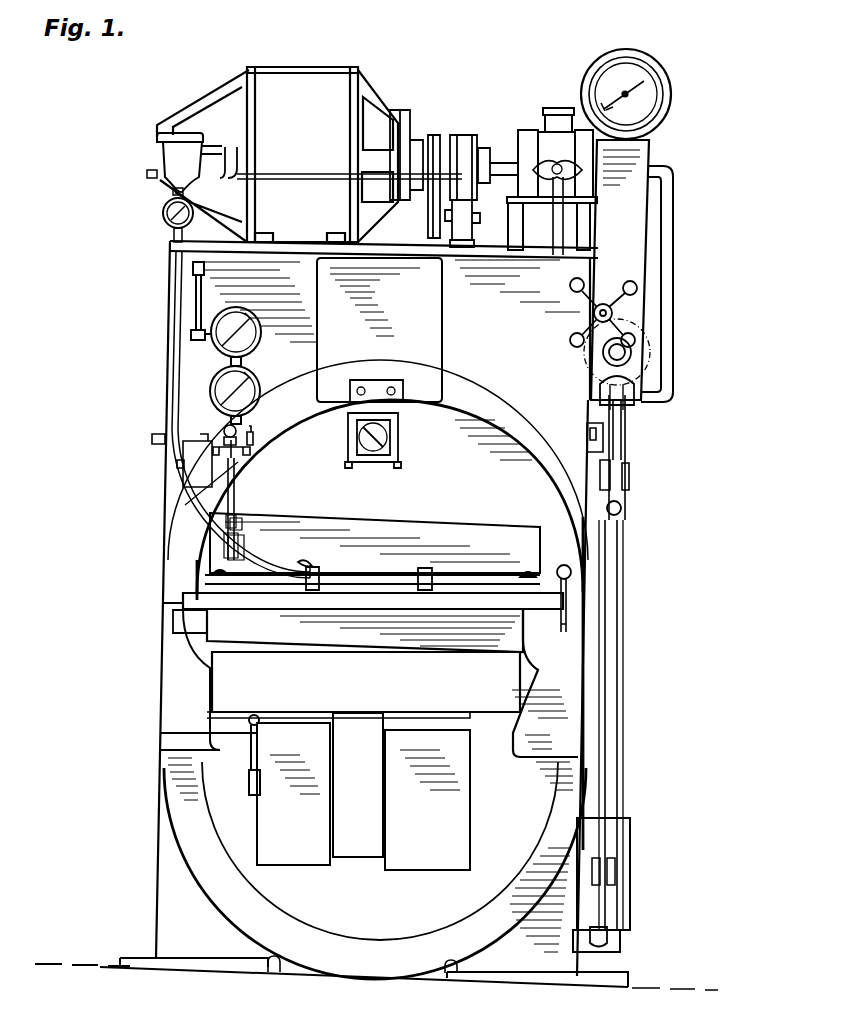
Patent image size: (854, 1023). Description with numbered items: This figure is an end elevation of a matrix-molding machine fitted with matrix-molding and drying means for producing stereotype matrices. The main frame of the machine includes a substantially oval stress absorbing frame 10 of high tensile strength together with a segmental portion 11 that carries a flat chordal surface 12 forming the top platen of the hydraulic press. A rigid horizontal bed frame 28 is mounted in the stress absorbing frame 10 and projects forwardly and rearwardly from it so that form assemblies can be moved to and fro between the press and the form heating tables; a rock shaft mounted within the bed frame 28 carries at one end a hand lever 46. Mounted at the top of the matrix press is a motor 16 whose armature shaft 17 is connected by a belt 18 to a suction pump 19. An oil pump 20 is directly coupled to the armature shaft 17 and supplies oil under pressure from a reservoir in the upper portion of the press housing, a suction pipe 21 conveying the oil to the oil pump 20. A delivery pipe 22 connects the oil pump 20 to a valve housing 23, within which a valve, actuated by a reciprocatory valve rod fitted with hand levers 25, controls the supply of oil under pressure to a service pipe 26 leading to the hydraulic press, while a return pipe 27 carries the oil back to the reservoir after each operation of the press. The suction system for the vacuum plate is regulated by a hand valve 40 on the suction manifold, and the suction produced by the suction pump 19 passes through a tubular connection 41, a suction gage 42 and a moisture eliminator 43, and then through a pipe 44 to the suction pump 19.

The stress absorbing frame 10 is at (513, 428).
The segmental portion 11 is at (379, 457).
The flat chordal surface 12 is at (508, 522).
The motor 16 is at (277, 154).
The armature shaft 17 is at (497, 162).
The belt 18 is at (427, 190).
The suction pump 19 is at (470, 222).
The oil pump 20 is at (545, 126).
The suction pipe 21 is at (555, 223).
The delivery pipe 22 is at (668, 247).
The valve housing 23 is at (638, 410).
The hand levers 25 is at (614, 443).
The service pipe 26 is at (607, 721).
The return pipe 27 is at (616, 655).
The bed frame 28 is at (565, 750).
The hand valve 40 is at (318, 574).
The tubular connection 41 is at (258, 572).
The suction gage 42 is at (164, 208).
The moisture eliminator 43 is at (165, 155).
The pipe 44 is at (303, 179).
The hand lever 46 is at (566, 596).